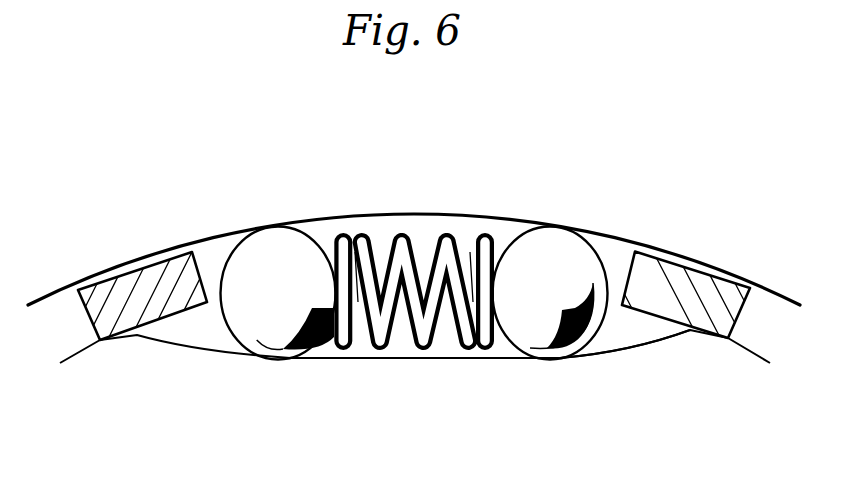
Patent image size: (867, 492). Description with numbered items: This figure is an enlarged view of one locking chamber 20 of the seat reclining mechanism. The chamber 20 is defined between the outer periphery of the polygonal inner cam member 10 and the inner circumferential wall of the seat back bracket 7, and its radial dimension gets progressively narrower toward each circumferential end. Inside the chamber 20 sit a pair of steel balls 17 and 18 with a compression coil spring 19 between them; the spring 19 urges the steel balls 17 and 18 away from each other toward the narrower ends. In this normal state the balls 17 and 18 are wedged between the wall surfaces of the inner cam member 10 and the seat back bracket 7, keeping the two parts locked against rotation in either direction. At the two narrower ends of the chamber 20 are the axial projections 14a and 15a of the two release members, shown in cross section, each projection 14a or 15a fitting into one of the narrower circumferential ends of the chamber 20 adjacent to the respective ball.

The seat back bracket 7 is at (407, 151).
The inner cam member 10 is at (436, 430).
The axial projections 14a is at (698, 280).
The axial projections 15a is at (142, 270).
The steel ball 17 is at (553, 235).
The steel ball 18 is at (283, 233).
The compression coil spring 19 is at (443, 235).
The chamber 20 is at (588, 353).